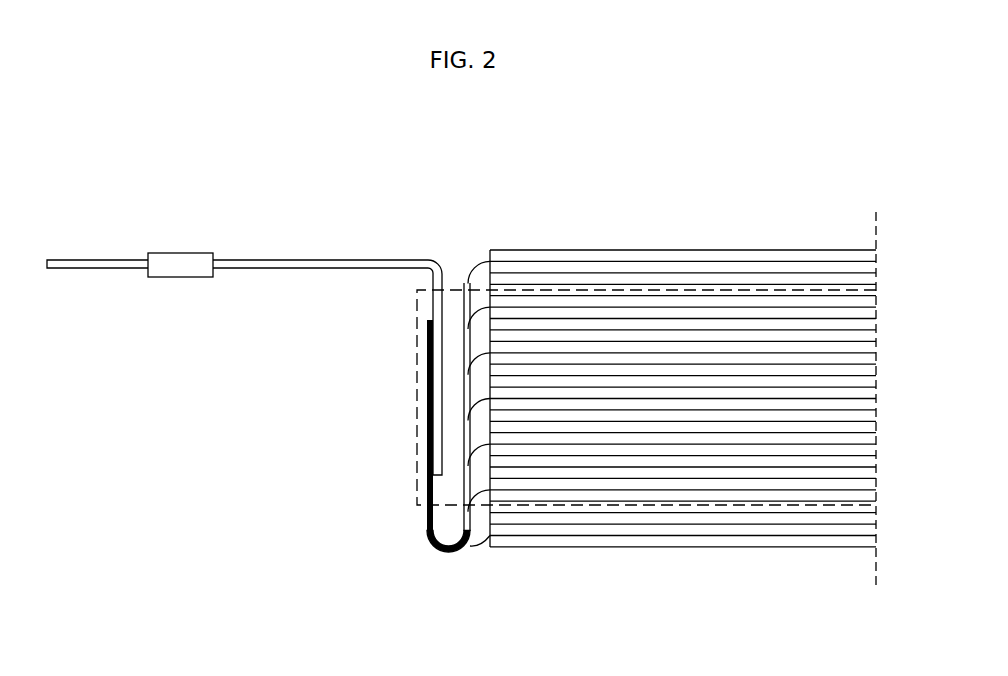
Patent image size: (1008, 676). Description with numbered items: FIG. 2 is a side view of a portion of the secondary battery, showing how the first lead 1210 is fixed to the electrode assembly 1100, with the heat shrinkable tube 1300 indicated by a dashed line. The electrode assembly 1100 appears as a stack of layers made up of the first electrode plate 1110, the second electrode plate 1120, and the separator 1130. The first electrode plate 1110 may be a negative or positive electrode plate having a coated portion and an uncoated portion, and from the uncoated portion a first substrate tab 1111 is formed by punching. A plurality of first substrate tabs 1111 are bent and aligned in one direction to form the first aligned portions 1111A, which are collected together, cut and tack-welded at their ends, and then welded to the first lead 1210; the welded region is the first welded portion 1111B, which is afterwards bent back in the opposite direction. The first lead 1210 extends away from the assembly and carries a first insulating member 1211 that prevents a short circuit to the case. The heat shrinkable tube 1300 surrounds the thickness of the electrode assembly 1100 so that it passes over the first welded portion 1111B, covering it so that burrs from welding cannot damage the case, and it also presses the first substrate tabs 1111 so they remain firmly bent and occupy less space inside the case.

The electrode assembly 1100 is at (683, 360).
The first electrode plate 1110 is at (543, 260).
The first substrate tab 1111 is at (421, 396).
The first aligned portion 1111A is at (474, 494).
The first welded portion 1111B is at (426, 450).
The second electrode plate 1120 is at (638, 283).
The separator 1130 is at (728, 275).
The first lead 1210 is at (306, 258).
The first insulating member 1211 is at (178, 253).
The heat shrinkable tube 1300 is at (700, 505).